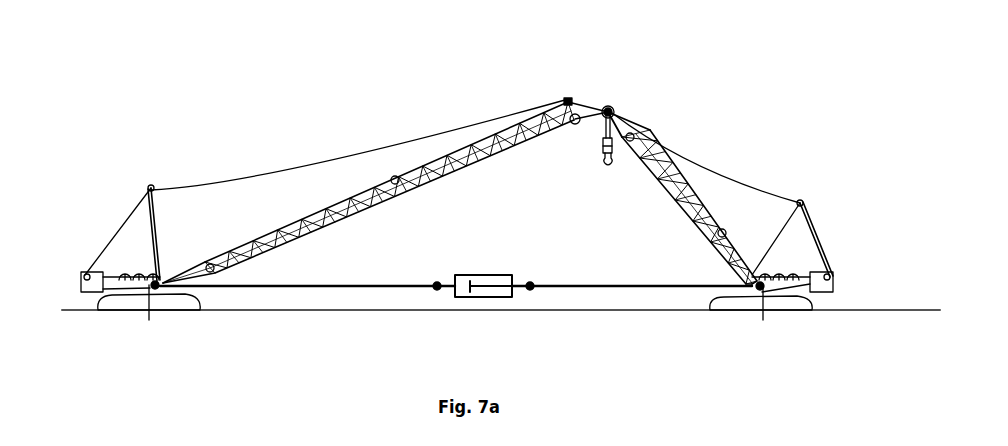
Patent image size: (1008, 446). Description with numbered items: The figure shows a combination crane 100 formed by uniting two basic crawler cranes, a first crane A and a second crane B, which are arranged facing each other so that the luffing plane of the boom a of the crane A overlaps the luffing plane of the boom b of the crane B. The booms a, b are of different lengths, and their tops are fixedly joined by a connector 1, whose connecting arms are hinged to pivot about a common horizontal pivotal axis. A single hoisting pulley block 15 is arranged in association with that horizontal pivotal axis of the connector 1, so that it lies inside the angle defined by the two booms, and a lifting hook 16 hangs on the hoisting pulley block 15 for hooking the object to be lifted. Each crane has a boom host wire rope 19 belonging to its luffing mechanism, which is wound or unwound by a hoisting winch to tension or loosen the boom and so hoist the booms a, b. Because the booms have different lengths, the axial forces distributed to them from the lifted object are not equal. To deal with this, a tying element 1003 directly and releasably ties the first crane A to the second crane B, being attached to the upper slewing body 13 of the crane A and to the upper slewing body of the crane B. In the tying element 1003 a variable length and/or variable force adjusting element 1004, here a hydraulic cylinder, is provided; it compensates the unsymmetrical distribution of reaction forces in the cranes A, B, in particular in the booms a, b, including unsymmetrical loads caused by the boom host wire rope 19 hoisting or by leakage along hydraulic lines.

The combination crane 100 is at (444, 125).
The connector 1 is at (608, 92).
The hoisting pulley block 15 is at (610, 110).
The lifting hook 16 is at (605, 170).
The boom host wire rope 19 is at (105, 243).
The upper slewing body 13 is at (170, 303).
The tying element 1003 is at (345, 287).
The variable length and/or variable force adjusting element 1004 is at (487, 297).
The first crane A is at (337, 178).
The second crane B is at (717, 190).
The boom of the first crane a is at (397, 196).
The boom of the second crane b is at (682, 211).